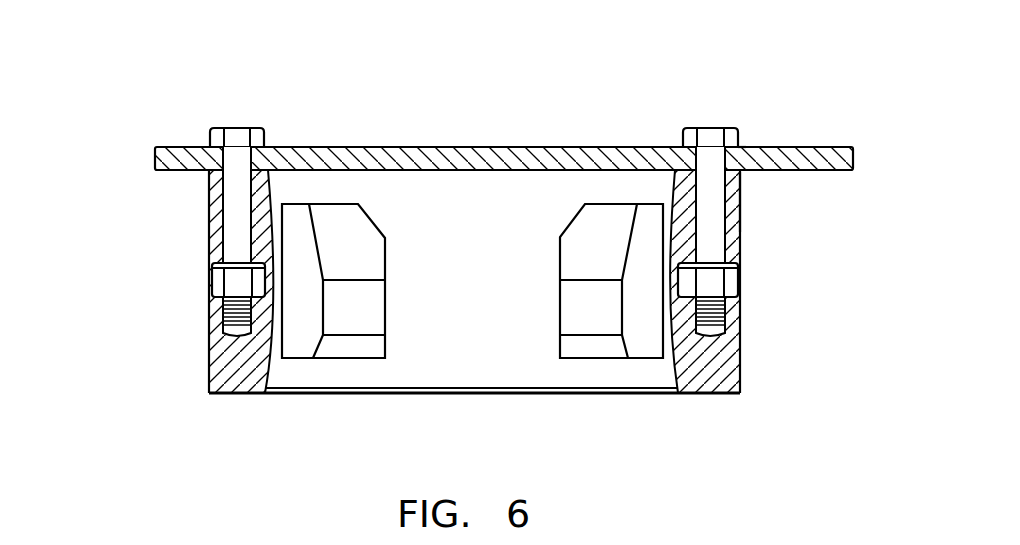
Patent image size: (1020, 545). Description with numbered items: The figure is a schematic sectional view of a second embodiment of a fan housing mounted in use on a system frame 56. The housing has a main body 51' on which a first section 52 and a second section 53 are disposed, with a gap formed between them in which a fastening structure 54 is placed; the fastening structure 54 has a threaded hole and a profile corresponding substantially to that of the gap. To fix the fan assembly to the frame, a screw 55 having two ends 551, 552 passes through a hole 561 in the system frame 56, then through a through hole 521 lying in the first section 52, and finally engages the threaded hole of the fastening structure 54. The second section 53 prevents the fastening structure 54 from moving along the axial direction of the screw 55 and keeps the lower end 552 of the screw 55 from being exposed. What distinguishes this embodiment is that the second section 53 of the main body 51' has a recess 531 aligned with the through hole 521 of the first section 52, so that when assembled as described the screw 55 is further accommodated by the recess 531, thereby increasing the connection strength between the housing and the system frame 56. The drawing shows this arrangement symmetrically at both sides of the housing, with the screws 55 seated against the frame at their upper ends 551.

The main body 51' is at (471, 422).
The first section 52 is at (740, 233).
The through hole 521 is at (740, 207).
The second section 53 is at (524, 408).
The recess 531 is at (722, 310).
The fastening structure 54 is at (740, 280).
The screw 55 is at (445, 189).
The end of screw 551 is at (210, 131).
The end of screw 552 is at (210, 266).
The system frame 56 is at (833, 146).
The hole 561 is at (742, 146).